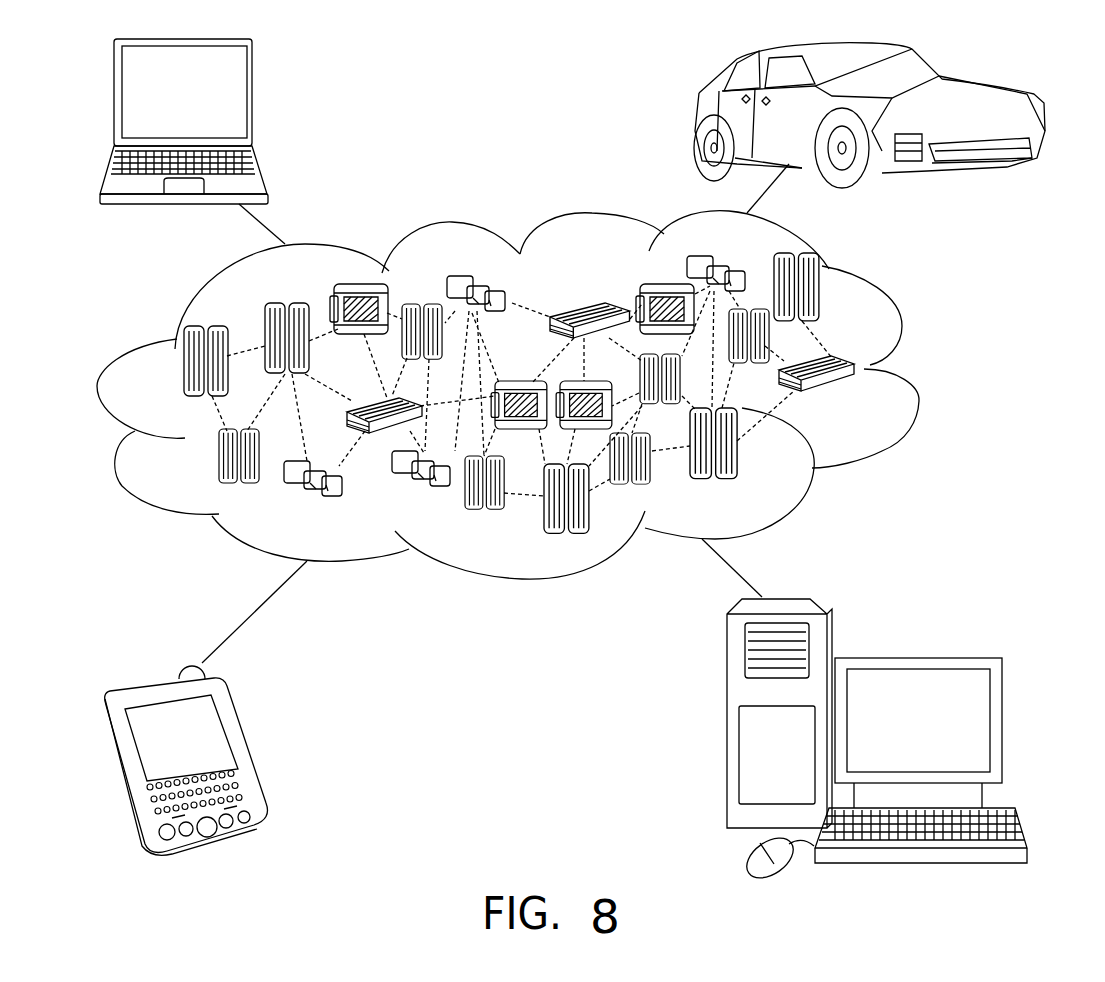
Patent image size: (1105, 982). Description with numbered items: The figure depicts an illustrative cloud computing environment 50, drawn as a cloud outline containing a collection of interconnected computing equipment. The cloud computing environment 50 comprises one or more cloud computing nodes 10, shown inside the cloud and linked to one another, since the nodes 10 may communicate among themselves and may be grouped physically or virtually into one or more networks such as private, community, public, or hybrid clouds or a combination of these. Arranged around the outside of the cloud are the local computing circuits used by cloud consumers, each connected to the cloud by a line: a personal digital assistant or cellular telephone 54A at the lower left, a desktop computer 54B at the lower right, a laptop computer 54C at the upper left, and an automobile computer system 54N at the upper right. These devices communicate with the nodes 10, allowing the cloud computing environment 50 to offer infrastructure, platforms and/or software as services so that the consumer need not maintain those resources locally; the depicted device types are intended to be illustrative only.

The cloud computing node 10 is at (858, 400).
The cloud computing environment 50 is at (536, 395).
The personal digital assistant or cellular telephone 54A is at (238, 750).
The desktop computer 54B is at (913, 655).
The laptop computer 54C is at (252, 102).
The automobile computer system 54N is at (697, 117).